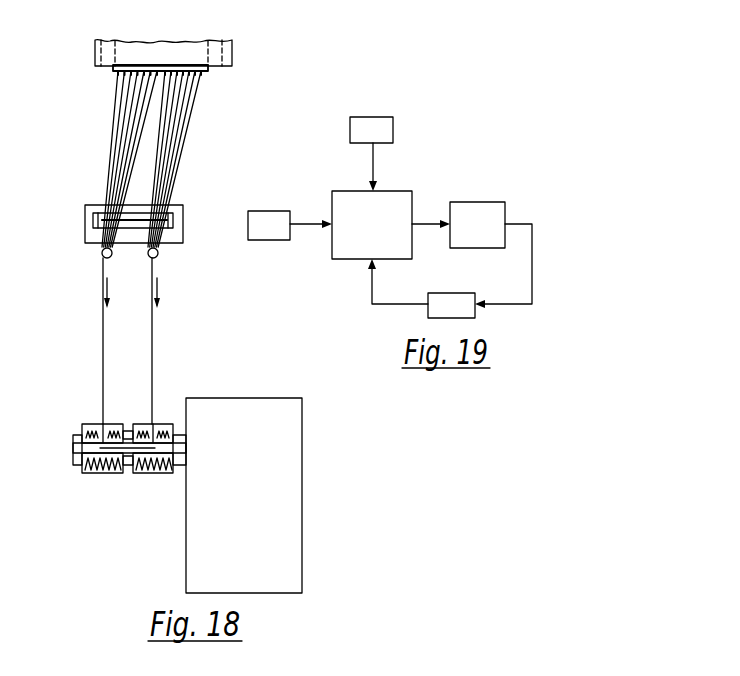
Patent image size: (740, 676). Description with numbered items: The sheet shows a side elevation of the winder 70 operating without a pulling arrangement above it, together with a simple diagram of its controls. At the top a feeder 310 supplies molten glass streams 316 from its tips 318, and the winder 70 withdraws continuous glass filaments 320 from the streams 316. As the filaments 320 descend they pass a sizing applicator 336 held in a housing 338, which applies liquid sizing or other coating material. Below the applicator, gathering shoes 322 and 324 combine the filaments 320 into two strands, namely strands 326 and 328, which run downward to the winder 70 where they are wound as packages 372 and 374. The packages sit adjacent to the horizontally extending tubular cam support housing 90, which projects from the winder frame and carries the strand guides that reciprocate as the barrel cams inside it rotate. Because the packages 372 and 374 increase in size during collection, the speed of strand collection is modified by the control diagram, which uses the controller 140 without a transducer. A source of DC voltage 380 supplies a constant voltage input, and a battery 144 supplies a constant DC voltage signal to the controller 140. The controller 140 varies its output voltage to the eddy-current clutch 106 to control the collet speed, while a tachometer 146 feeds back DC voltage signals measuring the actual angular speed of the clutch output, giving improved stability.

In FIG. 18, the feeder 310 is at (92, 38).
In FIG. 18, the tips 318 is at (118, 71).
In FIG. 18, the molten glass streams 316 is at (124, 77).
In FIG. 18, the continuous glass filaments 320 is at (145, 105).
In FIG. 18, the housing 338 is at (85, 221).
In FIG. 18, the sizing applicator 336 is at (101, 213).
In FIG. 18, the gathering shoe 322 is at (105, 259).
In FIG. 18, the gathering shoe 324 is at (156, 259).
In FIG. 18, the strand 326 is at (103, 318).
In FIG. 18, the strand 328 is at (152, 320).
In FIG. 18, the package 372 is at (95, 424).
In FIG. 18, the package 374 is at (159, 424).
In FIG. 18, the cam support housing 90 is at (80, 449).
In FIG. 18, the winder 70 is at (198, 393).
In FIG. 19, the battery 144 is at (388, 117).
In FIG. 19, the controller 140 is at (385, 191).
In FIG. 19, the source of DC voltage 380 is at (289, 185).
In FIG. 19, the eddy-current clutch 106 is at (478, 202).
In FIG. 19, the tachometer 146 is at (456, 293).